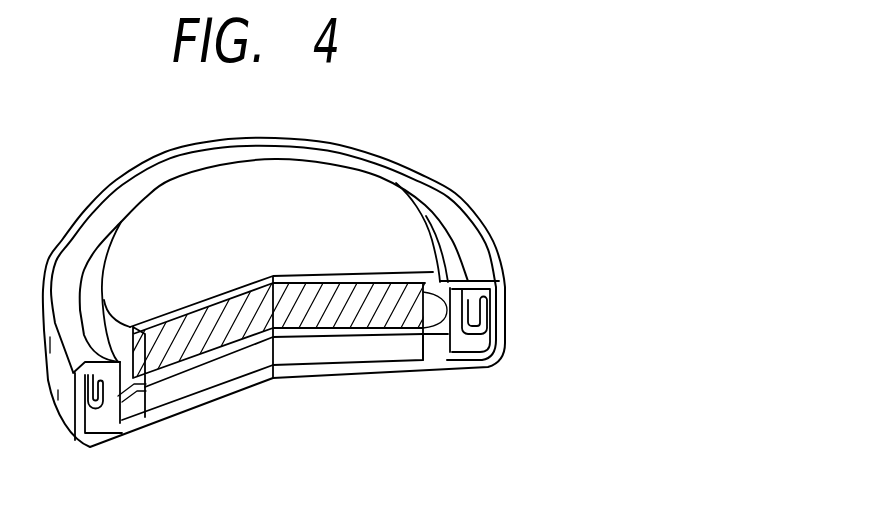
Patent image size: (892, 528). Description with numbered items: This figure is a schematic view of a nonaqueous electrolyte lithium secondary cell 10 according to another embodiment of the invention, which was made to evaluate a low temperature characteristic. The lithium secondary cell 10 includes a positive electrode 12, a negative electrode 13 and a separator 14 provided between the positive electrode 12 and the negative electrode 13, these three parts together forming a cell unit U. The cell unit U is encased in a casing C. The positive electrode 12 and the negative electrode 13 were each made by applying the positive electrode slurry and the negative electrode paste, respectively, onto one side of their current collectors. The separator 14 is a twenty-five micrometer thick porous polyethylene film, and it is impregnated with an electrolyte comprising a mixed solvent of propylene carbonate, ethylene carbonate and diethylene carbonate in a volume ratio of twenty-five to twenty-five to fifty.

The lithium secondary cell 10 is at (462, 188).
The casing C is at (490, 232).
The cell unit U is at (455, 340).
The positive electrode 12 is at (185, 393).
The negative electrode 13 is at (377, 310).
The separator 14 is at (243, 347).